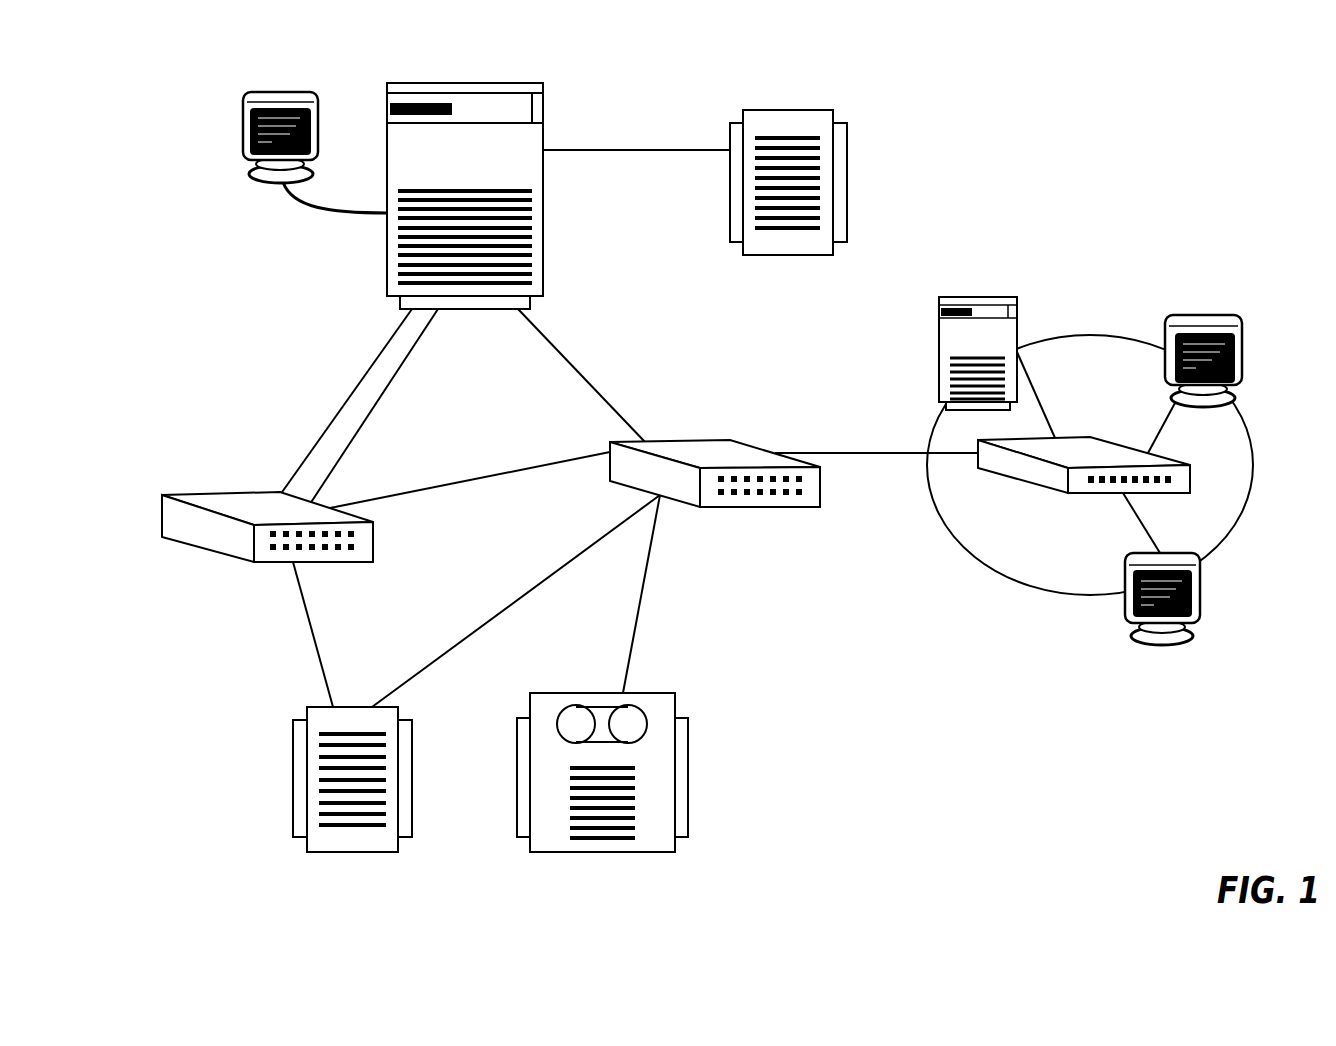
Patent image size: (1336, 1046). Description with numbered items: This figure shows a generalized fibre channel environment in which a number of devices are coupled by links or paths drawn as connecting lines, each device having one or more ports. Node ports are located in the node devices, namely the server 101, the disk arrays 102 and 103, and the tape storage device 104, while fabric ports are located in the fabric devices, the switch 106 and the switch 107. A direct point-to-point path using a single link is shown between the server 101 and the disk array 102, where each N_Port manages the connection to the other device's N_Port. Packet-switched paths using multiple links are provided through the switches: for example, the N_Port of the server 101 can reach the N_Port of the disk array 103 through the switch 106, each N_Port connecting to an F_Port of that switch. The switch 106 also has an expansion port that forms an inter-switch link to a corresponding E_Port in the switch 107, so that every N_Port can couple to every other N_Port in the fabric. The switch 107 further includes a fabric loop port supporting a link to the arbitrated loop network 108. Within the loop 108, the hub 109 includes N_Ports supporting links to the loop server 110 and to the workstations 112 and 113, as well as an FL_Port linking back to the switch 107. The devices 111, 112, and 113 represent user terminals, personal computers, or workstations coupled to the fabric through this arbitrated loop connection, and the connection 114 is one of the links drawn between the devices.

The server 101 is at (493, 93).
The disk array 102 is at (822, 122).
The disk array 103 is at (333, 840).
The tape storage device 104 is at (663, 705).
The switch 106 is at (240, 507).
The switch 107 is at (730, 455).
The arbitrated loop network 108 is at (1180, 246).
The hub 109 is at (1030, 468).
The loop server 110 is at (990, 307).
The user terminal 111 is at (280, 97).
The workstation 112 is at (1232, 330).
The workstation 113 is at (1163, 648).
The network connection 114 is at (292, 628).